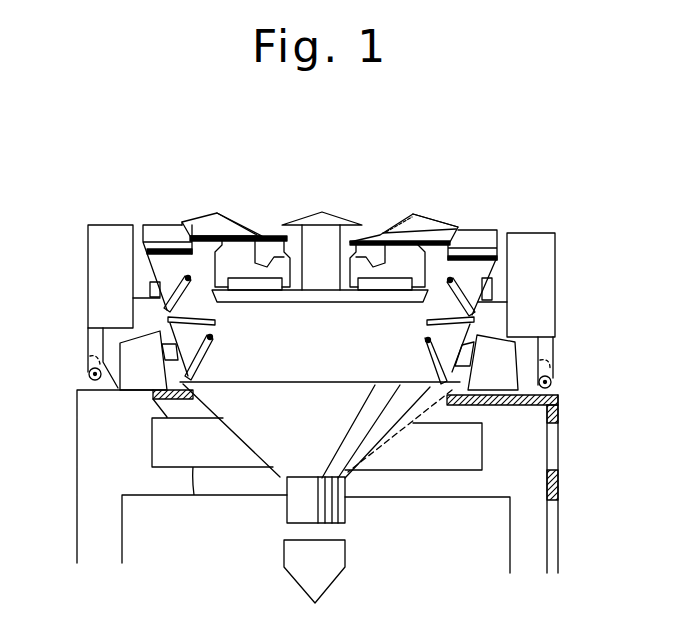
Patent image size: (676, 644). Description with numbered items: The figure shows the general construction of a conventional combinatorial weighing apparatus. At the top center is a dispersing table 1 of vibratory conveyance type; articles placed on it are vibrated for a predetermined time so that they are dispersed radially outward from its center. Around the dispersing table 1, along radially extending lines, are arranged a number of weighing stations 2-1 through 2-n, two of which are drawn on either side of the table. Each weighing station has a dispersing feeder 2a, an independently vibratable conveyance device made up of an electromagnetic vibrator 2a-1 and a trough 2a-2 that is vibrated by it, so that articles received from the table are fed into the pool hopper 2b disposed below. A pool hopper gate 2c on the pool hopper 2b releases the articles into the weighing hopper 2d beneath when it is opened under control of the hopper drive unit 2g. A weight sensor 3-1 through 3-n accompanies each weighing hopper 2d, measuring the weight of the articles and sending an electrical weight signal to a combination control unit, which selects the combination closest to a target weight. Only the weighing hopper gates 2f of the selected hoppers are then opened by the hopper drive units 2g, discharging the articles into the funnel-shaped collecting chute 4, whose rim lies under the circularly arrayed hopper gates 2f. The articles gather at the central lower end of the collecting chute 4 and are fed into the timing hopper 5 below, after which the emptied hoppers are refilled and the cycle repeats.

The dispersing table 1 is at (330, 218).
The weighing station 2-1 is at (143, 215).
The weighing station 2-n is at (530, 205).
The dispersing feeder 2a is at (198, 217).
The electromagnetic vibrator 2a-1 is at (253, 252).
The trough 2a-2 is at (233, 220).
The pool hopper 2b is at (150, 257).
The pool hopper gate 2c is at (185, 292).
The weighing hopper 2d is at (212, 336).
The weighing hopper gate 2f is at (217, 362).
The hopper drive unit 2g is at (100, 278).
The weight sensor 3-1 is at (132, 360).
The weight sensor 3-n is at (510, 357).
The collecting chute 4 is at (285, 447).
The timing hopper 5 is at (342, 563).